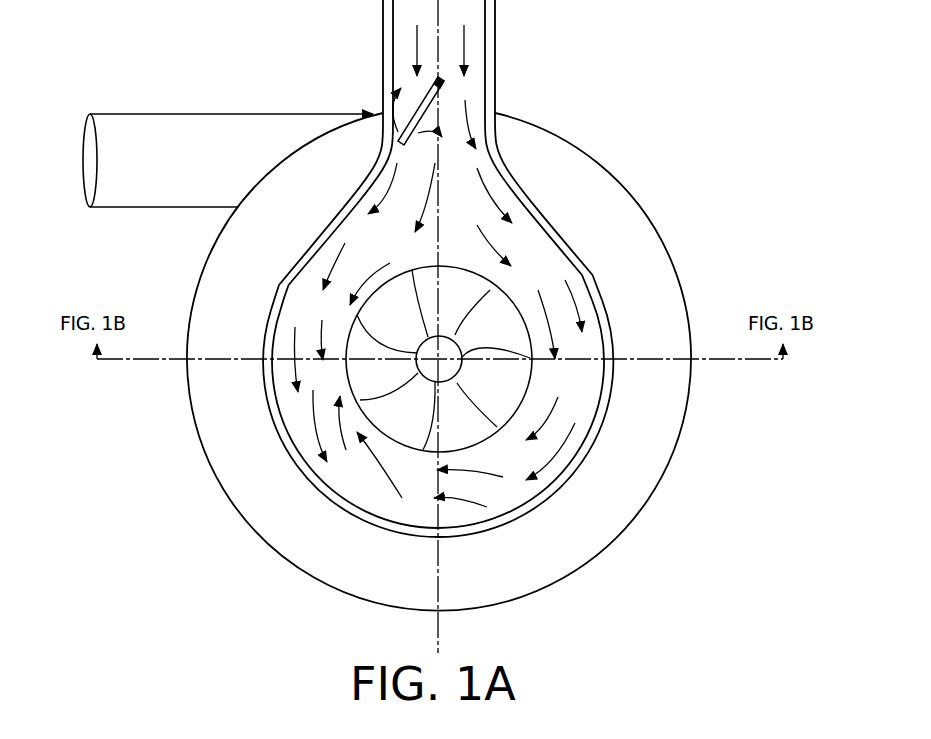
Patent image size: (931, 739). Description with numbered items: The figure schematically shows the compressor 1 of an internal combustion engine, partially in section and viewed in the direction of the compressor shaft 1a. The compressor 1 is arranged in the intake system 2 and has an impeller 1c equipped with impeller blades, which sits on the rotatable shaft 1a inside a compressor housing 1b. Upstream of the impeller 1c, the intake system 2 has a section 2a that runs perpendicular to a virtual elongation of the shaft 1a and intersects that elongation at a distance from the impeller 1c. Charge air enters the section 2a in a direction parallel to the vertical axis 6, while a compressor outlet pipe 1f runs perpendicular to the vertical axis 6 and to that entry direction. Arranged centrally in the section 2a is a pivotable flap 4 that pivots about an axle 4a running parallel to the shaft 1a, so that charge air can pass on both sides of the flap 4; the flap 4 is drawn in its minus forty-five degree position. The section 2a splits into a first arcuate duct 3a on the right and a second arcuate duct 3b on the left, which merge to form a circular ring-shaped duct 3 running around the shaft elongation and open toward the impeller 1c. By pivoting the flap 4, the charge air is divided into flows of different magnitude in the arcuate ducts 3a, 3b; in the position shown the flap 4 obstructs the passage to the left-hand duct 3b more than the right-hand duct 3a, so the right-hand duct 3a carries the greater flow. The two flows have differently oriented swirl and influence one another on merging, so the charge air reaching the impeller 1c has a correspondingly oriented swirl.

The compressor 1 is at (619, 64).
The compressor shaft 1a is at (372, 403).
The compressor housing 1b is at (594, 160).
The impeller 1c is at (483, 437).
The compressor outlet pipe 1f is at (124, 112).
The intake system 2 is at (468, 105).
The section of the intake system 2a is at (543, 150).
The ring-shaped duct 3 is at (583, 397).
The first arcuate duct 3a is at (575, 240).
The second arcuate duct 3b is at (292, 310).
The pivotable flap 4 is at (423, 103).
The axle 4a is at (438, 78).
The vertical axis 6 is at (438, 633).